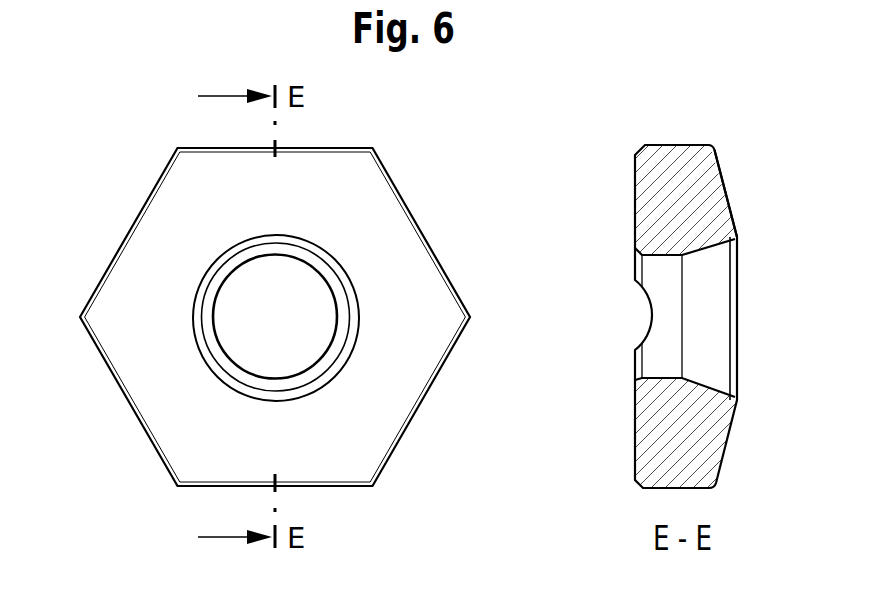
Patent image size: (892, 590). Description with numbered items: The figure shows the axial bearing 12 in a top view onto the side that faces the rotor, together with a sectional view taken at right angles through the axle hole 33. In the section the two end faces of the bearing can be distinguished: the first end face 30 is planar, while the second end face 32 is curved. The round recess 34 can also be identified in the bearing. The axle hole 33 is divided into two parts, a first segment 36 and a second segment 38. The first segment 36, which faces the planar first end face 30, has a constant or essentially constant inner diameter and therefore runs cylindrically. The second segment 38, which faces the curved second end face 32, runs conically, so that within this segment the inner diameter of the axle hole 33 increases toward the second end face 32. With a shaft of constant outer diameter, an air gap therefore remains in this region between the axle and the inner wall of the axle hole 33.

The axial bearing 12 is at (125, 186).
The first end face 30 is at (630, 200).
The second end face 32 is at (733, 198).
The axle hole 33 is at (712, 312).
The round recess 34 is at (652, 318).
The first segment 36 is at (655, 260).
The second segment 38 is at (715, 375).